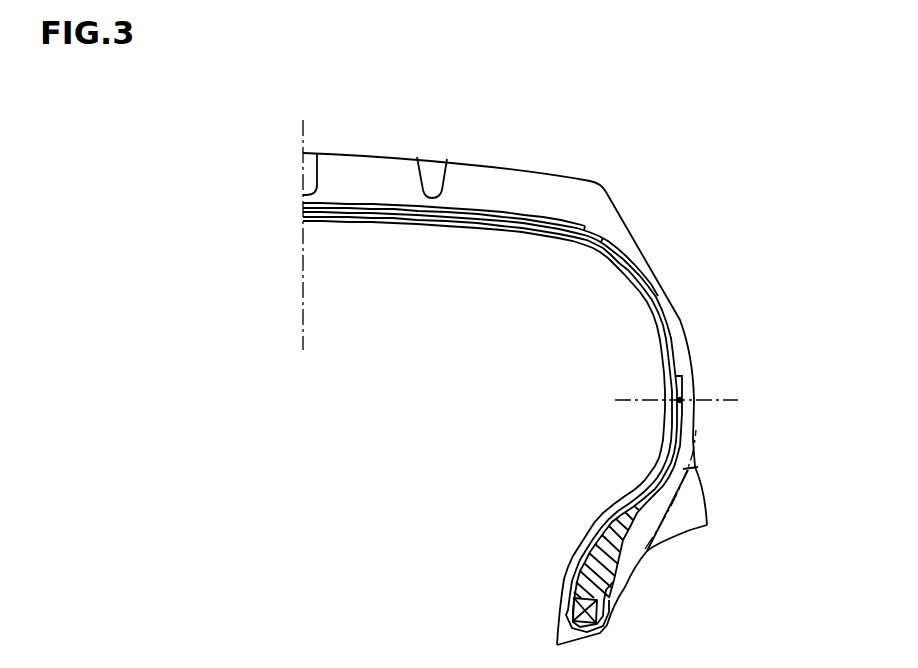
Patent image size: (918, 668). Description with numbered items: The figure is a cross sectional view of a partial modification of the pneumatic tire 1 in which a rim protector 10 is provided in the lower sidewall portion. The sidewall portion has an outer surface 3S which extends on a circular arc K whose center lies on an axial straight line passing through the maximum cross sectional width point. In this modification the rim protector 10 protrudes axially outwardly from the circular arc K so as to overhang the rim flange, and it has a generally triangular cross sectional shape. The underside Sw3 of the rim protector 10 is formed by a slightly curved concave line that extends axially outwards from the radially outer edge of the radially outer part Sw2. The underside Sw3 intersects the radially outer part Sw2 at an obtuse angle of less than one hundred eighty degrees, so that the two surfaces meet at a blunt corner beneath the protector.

The pneumatic tire 1 is at (698, 207).
The circular arc K is at (700, 467).
The outer surface of the sidewall portion 3S is at (708, 510).
The rim protector 10 is at (690, 520).
The underside of the rim protector Sw3 is at (682, 532).
The radially outer part Sw2 is at (642, 572).